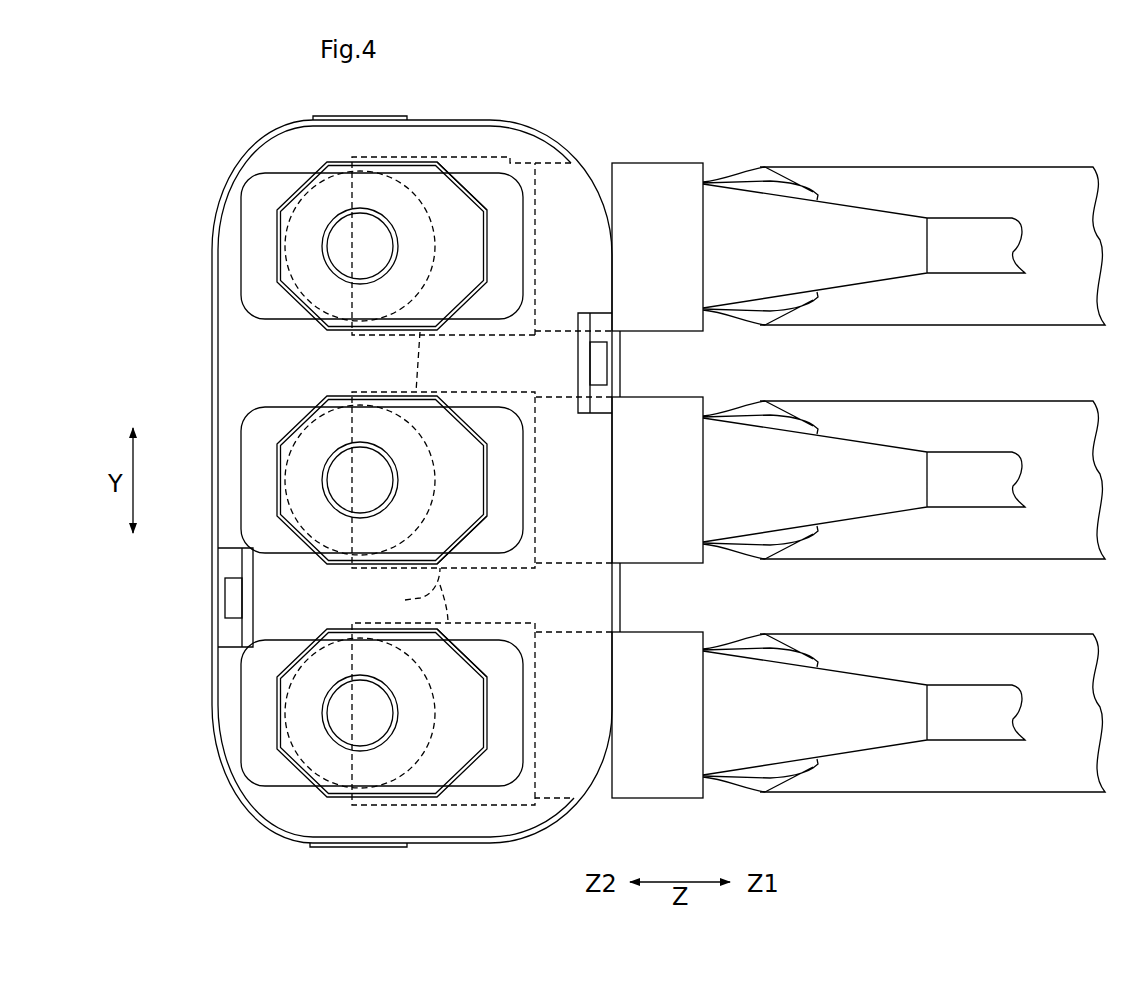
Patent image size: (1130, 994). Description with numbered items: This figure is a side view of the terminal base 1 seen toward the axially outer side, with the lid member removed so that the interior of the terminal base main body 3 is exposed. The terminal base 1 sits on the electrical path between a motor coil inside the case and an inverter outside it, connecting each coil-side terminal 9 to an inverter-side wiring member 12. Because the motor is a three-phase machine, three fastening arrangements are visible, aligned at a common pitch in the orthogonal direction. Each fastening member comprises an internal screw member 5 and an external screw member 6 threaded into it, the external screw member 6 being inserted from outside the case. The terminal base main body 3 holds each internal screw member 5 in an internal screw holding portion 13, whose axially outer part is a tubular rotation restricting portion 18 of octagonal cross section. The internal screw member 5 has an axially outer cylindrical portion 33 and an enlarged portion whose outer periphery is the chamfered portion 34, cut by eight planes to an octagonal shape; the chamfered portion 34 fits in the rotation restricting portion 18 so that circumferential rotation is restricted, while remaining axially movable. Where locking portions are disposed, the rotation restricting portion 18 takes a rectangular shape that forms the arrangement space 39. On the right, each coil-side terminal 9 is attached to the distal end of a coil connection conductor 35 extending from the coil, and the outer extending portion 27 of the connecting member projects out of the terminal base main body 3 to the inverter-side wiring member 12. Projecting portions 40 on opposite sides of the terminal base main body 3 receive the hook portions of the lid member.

The terminal base 1 is at (190, 150).
The terminal base main body 3 is at (302, 155).
The internal screw member 5 is at (285, 274).
The external screw member 6 is at (350, 240).
The coil-side terminal 9 is at (510, 155).
The inverter-side wiring member 12 is at (1048, 190).
The internal screw holding portion 13 is at (326, 394).
The rotation restricting portion 18 is at (465, 200).
The outer extending portion 27 is at (757, 308).
The cylindrical portion 33 is at (403, 308).
The chamfered portion 34 is at (428, 180).
The coil connection conductor 35 is at (977, 258).
The arrangement space 39 is at (260, 214).
The projecting portion 40 is at (598, 362).